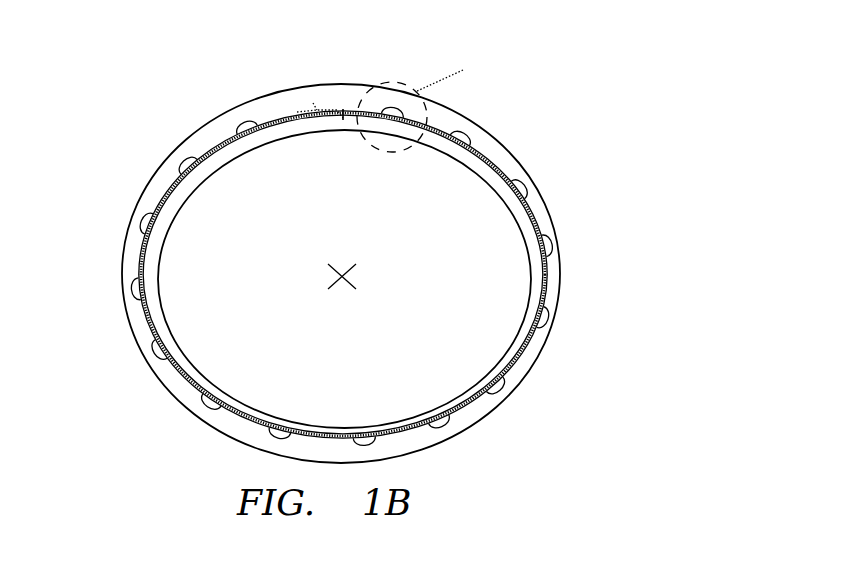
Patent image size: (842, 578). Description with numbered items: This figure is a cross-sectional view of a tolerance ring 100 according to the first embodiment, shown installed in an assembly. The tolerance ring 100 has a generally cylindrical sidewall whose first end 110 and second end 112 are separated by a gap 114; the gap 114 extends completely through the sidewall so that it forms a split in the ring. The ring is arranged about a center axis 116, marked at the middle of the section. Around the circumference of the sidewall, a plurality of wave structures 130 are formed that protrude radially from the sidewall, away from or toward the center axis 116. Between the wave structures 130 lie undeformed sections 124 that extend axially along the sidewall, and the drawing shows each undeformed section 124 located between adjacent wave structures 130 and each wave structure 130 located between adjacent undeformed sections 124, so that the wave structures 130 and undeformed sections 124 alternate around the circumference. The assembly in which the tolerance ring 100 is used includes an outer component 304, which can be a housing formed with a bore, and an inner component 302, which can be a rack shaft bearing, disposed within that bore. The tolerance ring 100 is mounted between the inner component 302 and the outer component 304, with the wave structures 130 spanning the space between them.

The tolerance ring 100 is at (608, 80).
The first end 110 is at (363, 262).
The second end 112 is at (343, 112).
The gap 114 is at (313, 103).
The center axis 116 is at (352, 281).
The undeformed sections 124 is at (500, 170).
The wave structures 130 is at (177, 165).
The inner component 302 is at (530, 294).
The outer component 304 is at (187, 143).